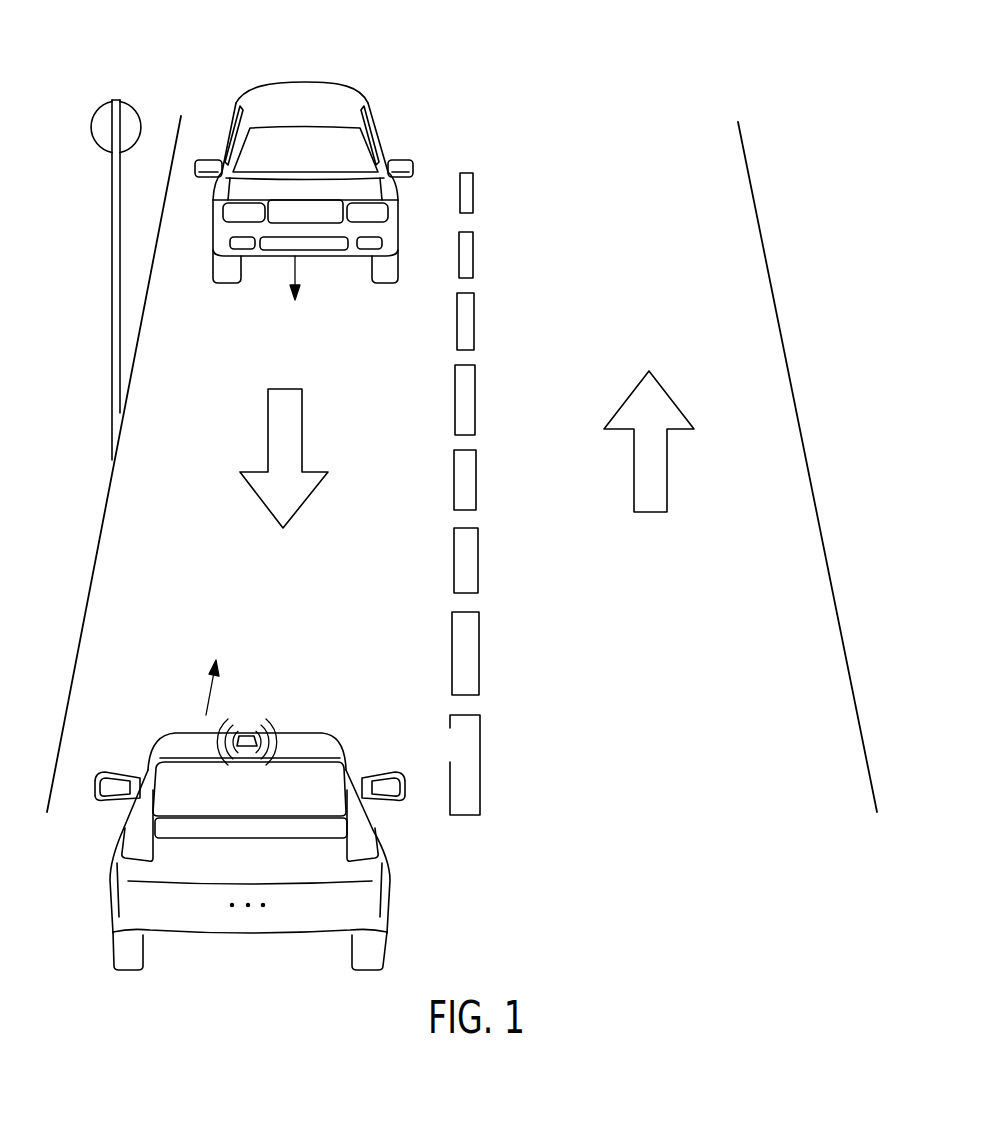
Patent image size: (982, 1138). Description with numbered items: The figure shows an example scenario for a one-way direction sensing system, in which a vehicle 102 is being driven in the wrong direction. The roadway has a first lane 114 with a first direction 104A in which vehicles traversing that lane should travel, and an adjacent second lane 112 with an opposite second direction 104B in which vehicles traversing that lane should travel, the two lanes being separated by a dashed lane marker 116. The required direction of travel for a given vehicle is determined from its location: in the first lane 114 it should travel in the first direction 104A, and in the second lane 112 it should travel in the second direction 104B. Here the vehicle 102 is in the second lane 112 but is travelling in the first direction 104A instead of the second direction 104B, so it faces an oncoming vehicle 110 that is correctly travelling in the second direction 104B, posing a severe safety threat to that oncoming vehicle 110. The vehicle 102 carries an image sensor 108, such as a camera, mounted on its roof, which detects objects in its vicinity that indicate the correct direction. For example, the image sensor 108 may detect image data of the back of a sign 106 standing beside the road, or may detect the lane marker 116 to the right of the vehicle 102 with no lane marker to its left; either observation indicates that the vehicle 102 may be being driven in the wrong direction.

The vehicle 102 is at (250, 813).
The first direction 104A is at (668, 455).
The second direction 104B is at (302, 441).
The sign 106 is at (123, 88).
The image sensor 108 is at (248, 734).
The oncoming vehicle 110 is at (337, 100).
The second lane 112 is at (394, 756).
The first lane 114 is at (727, 789).
The lane marker 116 is at (466, 480).